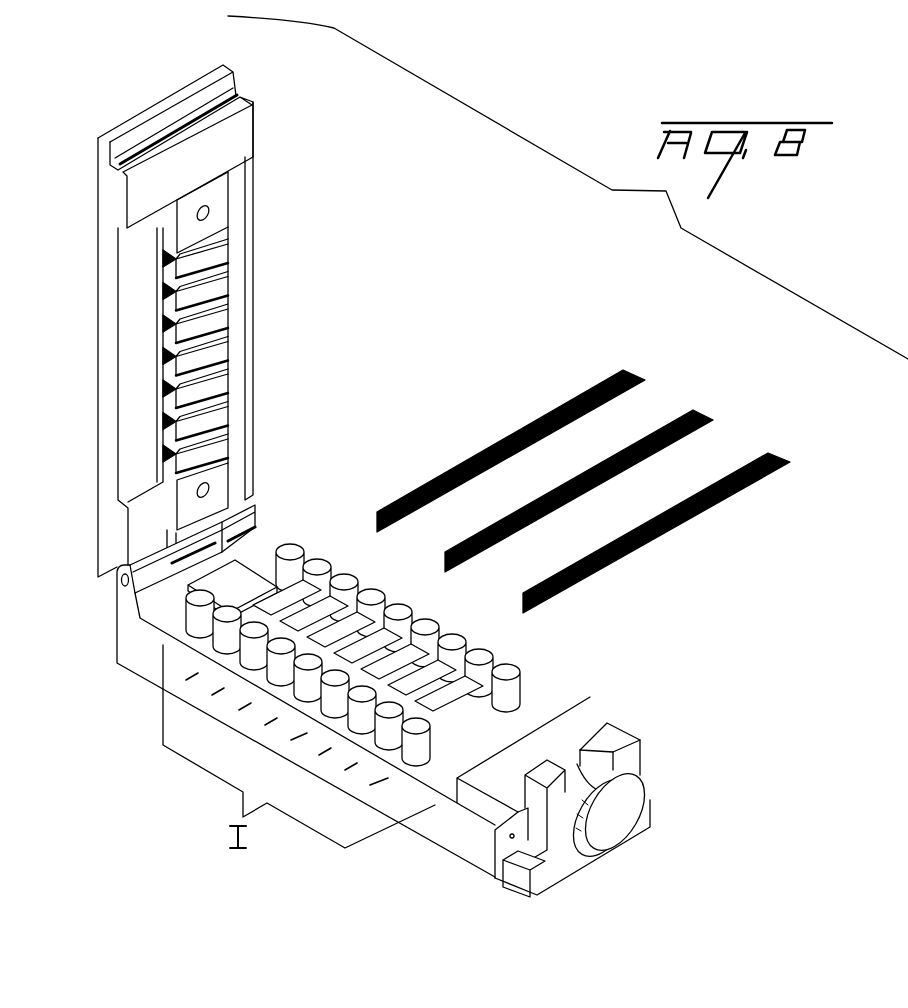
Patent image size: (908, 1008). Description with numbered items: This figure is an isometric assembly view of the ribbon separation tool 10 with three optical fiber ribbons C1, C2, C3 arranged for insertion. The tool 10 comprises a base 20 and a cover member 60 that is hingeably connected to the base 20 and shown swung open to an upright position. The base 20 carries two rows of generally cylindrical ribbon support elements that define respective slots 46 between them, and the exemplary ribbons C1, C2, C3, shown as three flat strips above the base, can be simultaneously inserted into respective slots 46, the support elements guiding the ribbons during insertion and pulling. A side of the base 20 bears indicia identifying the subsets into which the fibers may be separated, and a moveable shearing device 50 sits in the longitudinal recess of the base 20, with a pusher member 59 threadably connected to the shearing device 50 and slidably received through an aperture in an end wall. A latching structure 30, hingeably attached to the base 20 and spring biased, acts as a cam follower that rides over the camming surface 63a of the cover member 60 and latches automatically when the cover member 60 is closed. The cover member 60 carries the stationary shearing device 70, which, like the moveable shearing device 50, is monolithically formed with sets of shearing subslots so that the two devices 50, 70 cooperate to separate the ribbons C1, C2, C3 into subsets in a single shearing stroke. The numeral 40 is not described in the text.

The ribbon separation tool 10 is at (328, 224).
The base 20 is at (163, 687).
The latching structure 30 is at (613, 738).
The pegs 40 is at (298, 540).
The slots 46 is at (312, 551).
The moveable shearing device 50 is at (244, 578).
The pusher member 59 is at (633, 793).
The cover member 60 is at (126, 113).
The camming surface 63a is at (243, 104).
The stationary shearing device 70 is at (216, 191).
The optical fiber ribbon C1 is at (668, 512).
The optical fiber ribbon C2 is at (561, 490).
The optical fiber ribbon C3 is at (482, 453).